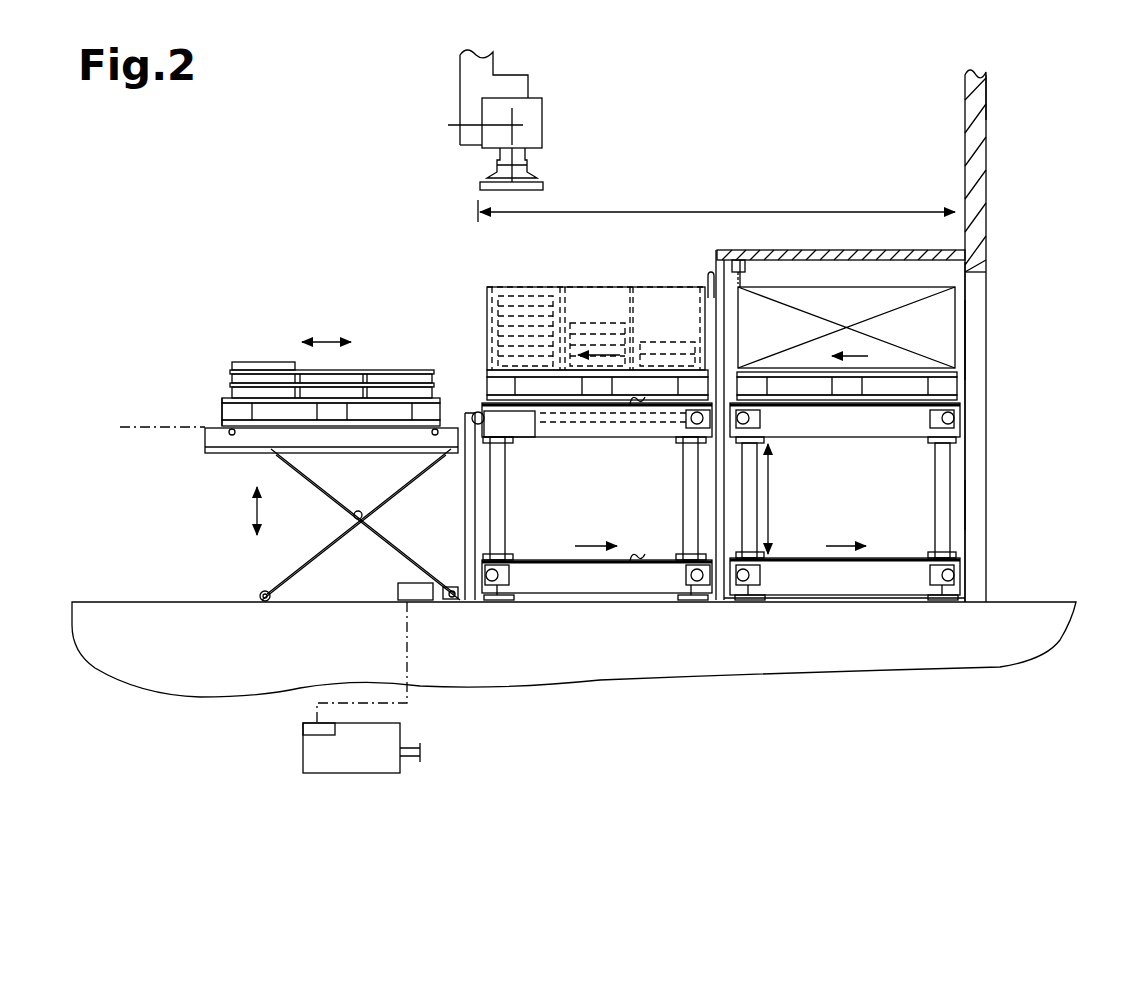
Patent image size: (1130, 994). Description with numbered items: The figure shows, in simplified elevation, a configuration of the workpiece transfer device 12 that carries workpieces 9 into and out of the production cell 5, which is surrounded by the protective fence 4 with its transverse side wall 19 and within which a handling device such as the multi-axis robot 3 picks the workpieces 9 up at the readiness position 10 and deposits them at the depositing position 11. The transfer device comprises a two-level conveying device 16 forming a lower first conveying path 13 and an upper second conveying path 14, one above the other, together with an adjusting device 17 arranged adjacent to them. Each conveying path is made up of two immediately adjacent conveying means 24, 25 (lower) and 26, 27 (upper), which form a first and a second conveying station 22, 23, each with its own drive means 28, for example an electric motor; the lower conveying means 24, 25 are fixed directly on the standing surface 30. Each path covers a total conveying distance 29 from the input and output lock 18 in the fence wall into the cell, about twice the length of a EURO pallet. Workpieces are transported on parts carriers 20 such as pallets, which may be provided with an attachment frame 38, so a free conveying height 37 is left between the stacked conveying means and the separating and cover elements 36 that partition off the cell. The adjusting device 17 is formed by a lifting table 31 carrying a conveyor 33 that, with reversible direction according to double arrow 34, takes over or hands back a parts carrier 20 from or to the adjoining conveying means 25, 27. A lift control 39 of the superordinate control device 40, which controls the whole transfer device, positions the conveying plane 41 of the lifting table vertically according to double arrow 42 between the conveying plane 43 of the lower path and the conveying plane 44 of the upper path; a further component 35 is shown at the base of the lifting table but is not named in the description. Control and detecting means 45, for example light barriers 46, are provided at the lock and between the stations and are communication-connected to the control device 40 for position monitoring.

The multi-axis robot 3 is at (427, 97).
The protective fence 4 is at (992, 187).
The production cell 5 is at (1018, 66).
The workpieces 9 is at (480, 184).
The readiness position 10 is at (615, 284).
The depositing position 11 is at (305, 283).
The workpiece transfer device 12 is at (287, 283).
The first conveying path 13 is at (1015, 505).
The second conveying path 14 is at (1012, 347).
The conveying device 16 is at (1008, 325).
The adjusting device 17 is at (200, 508).
The input and output lock 18 is at (1012, 270).
The transverse side wall 19 is at (980, 120).
The parts carrier 20 is at (950, 385).
The first conveying station 22 is at (780, 622).
The second conveying station 23 is at (530, 622).
The conveying means 24 is at (858, 580).
The conveying means 25 is at (582, 595).
The conveying means 26 is at (903, 430).
The conveying means 27 is at (588, 430).
The drive means 28 is at (518, 430).
The total conveying distance 29 is at (706, 208).
The standing surface 30 is at (170, 598).
The lifting table 31 is at (205, 440).
The conveyor 33 is at (195, 408).
The double arrow 34 is at (326, 338).
The drive motor 35 is at (425, 597).
The separating and cover elements 36 is at (820, 256).
The free conveying height 37 is at (775, 500).
The attachment frame 38 is at (945, 300).
The lift control 39 is at (310, 728).
The control device 40 is at (310, 762).
The conveying plane 41 is at (145, 424).
The double arrow 42 is at (257, 510).
The conveying plane 43 is at (637, 557).
The conveying plane 44 is at (640, 400).
The control and detecting means 45 is at (706, 268).
The light barriers 46 is at (735, 253).